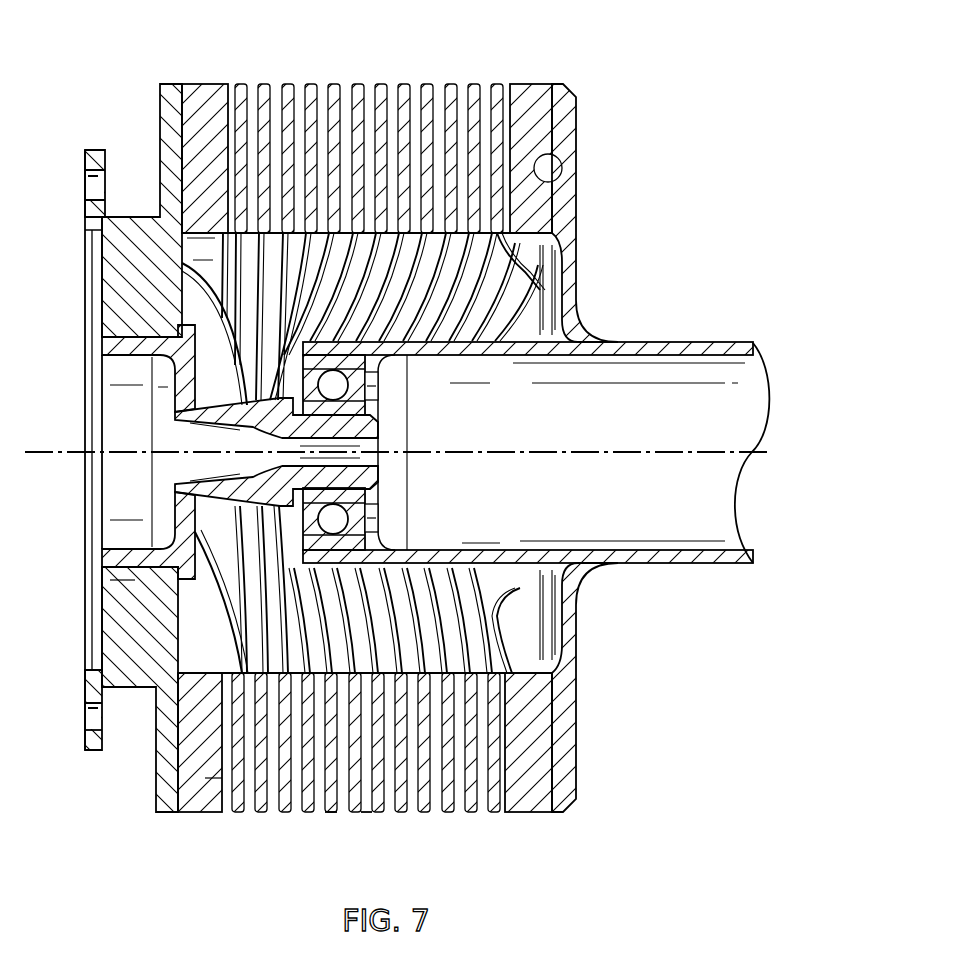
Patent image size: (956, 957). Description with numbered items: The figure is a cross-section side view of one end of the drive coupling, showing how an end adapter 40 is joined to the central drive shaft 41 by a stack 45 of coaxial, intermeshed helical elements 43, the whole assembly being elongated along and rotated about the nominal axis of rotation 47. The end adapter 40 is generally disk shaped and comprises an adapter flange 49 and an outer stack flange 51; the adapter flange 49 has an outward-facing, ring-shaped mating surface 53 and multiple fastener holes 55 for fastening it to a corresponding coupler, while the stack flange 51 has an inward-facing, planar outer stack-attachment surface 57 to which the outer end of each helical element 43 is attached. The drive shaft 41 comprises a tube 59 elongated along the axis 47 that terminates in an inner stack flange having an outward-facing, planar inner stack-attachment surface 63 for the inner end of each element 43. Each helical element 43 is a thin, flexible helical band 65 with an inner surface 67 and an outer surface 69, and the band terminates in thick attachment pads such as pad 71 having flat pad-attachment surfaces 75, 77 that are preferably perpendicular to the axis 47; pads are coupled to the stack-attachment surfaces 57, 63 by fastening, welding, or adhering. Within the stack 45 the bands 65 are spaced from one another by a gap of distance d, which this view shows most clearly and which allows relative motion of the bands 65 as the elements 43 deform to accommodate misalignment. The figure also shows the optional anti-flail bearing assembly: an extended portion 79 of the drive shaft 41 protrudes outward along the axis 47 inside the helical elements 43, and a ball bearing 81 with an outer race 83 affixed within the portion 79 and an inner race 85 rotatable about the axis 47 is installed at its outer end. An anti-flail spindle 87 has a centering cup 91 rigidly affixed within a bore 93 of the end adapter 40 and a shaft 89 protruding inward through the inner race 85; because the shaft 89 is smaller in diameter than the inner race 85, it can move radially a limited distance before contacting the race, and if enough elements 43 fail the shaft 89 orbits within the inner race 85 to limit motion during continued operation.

The end adapter 40 is at (80, 216).
The central drive shaft 41 is at (683, 568).
The helical element 43 is at (330, 815).
The stack 45 is at (180, 67).
The nominal axis of rotation 47 is at (50, 452).
The adapter flange 49 is at (80, 686).
The outer stack flange 51 is at (166, 124).
The mating surface 53 is at (86, 746).
The fastener holes 55 is at (88, 721).
The outer stack-attachment surface 57 is at (186, 792).
The tube 59 is at (684, 342).
The inner stack-attachment surface 63 is at (558, 102).
The helical band 65 is at (468, 814).
The inner surface 67 is at (243, 807).
The outer surface 69 is at (214, 778).
The attachment pad 71 is at (522, 805).
The pad-attachment surface 75 is at (556, 170).
The pad-attachment surface 77 is at (170, 757).
The extended portion 79 is at (503, 350).
The ball bearing 81 is at (382, 390).
The outer race 83 is at (366, 518).
The inner race 85 is at (366, 503).
The anti-flail spindle 87 is at (150, 330).
The shaft 89 is at (379, 430).
The centering cup 91 is at (102, 562).
The bore 93 is at (108, 352).
The gap distance d is at (366, 815).